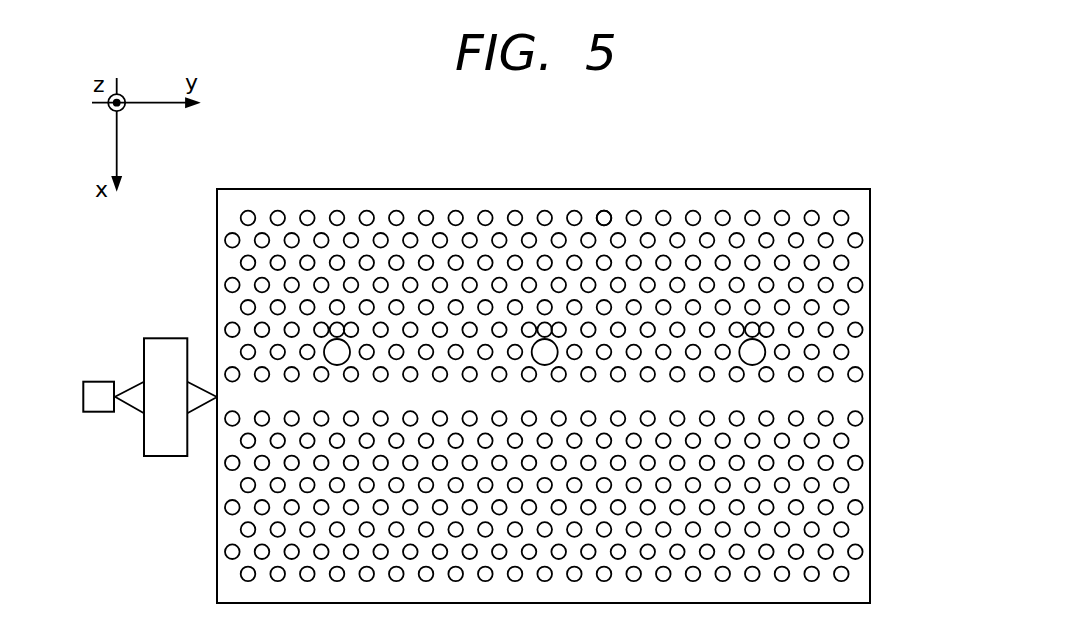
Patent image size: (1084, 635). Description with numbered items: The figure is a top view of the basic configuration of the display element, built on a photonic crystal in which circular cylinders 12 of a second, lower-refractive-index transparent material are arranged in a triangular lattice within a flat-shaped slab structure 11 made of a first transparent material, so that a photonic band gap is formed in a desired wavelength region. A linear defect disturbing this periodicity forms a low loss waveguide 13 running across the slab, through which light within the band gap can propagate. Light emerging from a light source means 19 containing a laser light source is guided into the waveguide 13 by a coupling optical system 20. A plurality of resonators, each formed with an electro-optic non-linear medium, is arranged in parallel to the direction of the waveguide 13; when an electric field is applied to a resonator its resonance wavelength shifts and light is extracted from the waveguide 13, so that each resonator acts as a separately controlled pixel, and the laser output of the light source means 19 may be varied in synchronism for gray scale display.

The slab structure 11 is at (471, 205).
The circular cylinders 12 is at (604, 218).
The waveguide 13 is at (855, 397).
The light source means 19 is at (101, 382).
The coupling optical system 20 is at (163, 345).